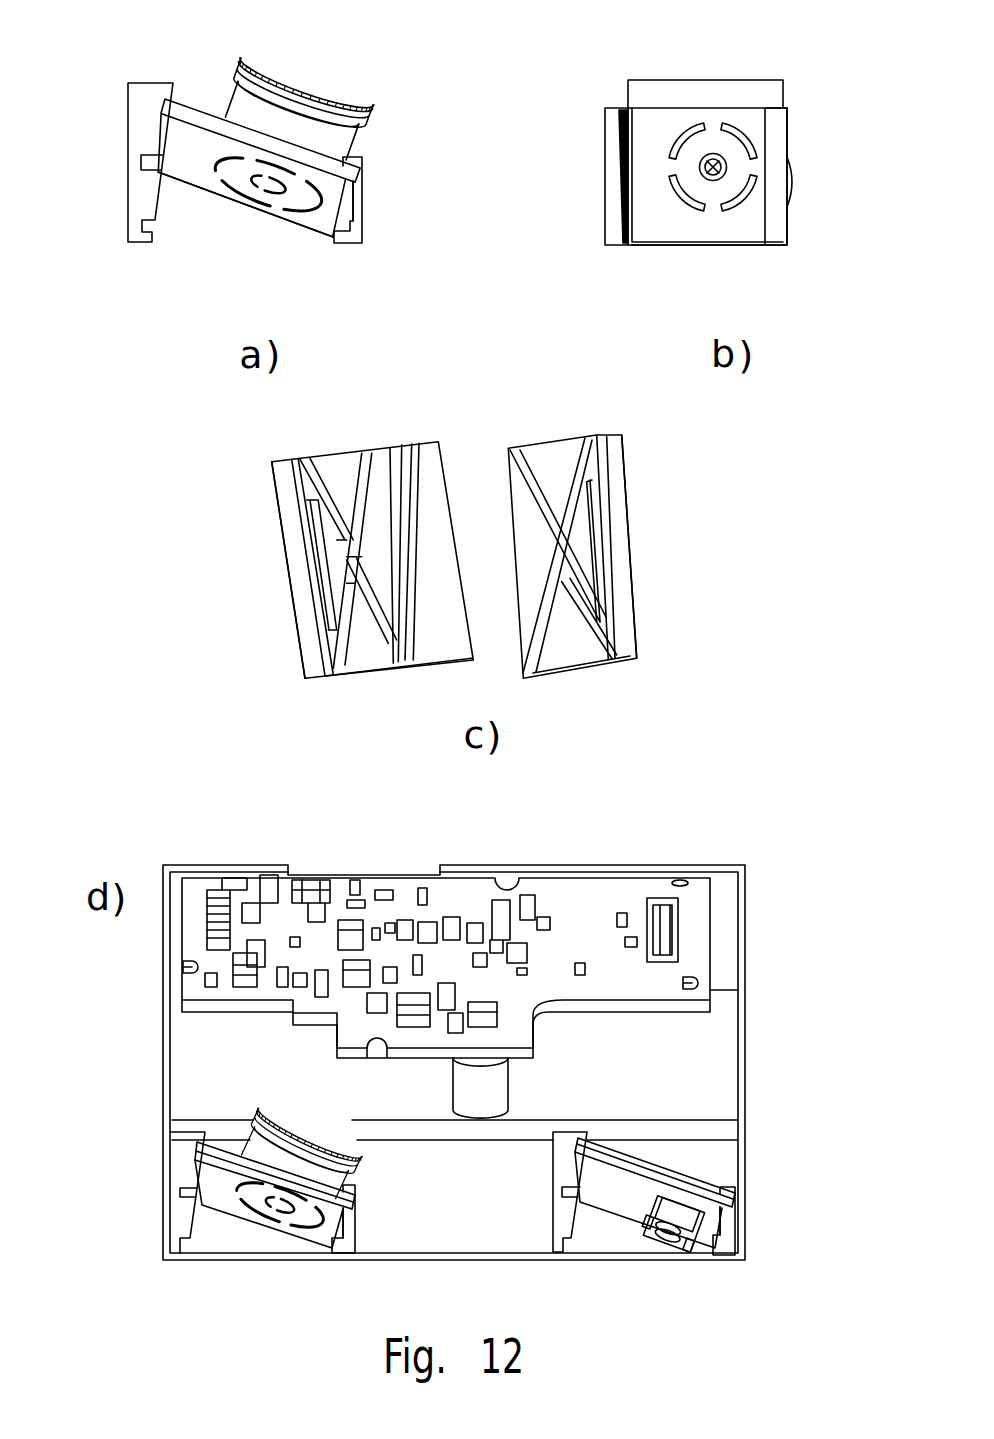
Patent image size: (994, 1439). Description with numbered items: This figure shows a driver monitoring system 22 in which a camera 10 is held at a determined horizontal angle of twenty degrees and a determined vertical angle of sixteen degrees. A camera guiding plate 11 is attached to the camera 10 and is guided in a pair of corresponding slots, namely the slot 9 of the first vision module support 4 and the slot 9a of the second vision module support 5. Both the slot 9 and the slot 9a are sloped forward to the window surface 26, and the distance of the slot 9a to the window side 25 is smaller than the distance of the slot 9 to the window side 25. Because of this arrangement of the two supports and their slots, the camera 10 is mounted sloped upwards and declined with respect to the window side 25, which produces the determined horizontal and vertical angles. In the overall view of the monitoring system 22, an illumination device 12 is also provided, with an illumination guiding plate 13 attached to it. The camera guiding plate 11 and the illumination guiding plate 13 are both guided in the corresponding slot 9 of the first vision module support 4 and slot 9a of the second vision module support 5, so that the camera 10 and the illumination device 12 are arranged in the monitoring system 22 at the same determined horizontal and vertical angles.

The first vision module support 4 is at (140, 97).
The second vision module support 5 is at (358, 160).
The slot 9 is at (158, 116).
The slot 9a is at (360, 182).
The camera 10 is at (243, 117).
The camera guiding plate 11 is at (205, 173).
The illumination device 12 is at (671, 1244).
The illumination guiding plate 13 is at (602, 1195).
The driver monitoring system 22 is at (234, 839).
The window side 25 is at (247, 224).
The window surface 26 is at (292, 588).